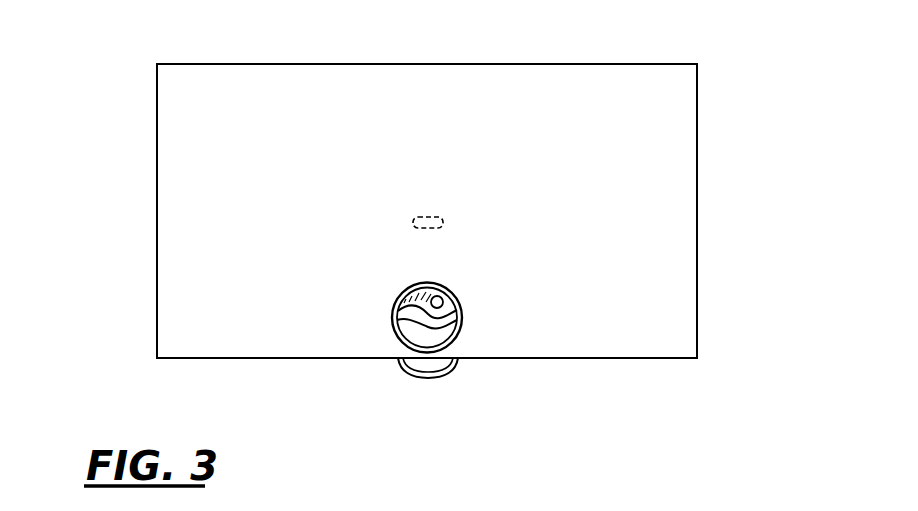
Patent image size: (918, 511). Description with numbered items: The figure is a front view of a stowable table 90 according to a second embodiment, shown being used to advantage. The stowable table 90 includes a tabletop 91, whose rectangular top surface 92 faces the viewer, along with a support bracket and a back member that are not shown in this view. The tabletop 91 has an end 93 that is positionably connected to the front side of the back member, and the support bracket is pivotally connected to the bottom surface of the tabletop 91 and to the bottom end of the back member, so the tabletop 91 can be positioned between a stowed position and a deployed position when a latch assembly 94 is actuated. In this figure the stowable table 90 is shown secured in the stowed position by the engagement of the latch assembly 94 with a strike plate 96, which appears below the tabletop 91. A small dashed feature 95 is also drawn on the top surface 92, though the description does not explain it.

The stowable table 90 is at (713, 287).
The tabletop 91 is at (617, 358).
The top surface 92 is at (657, 232).
The end 93 is at (450, 64).
The latch assembly 94 is at (473, 318).
The hidden slot 95 is at (443, 218).
The strike plate 96 is at (432, 368).